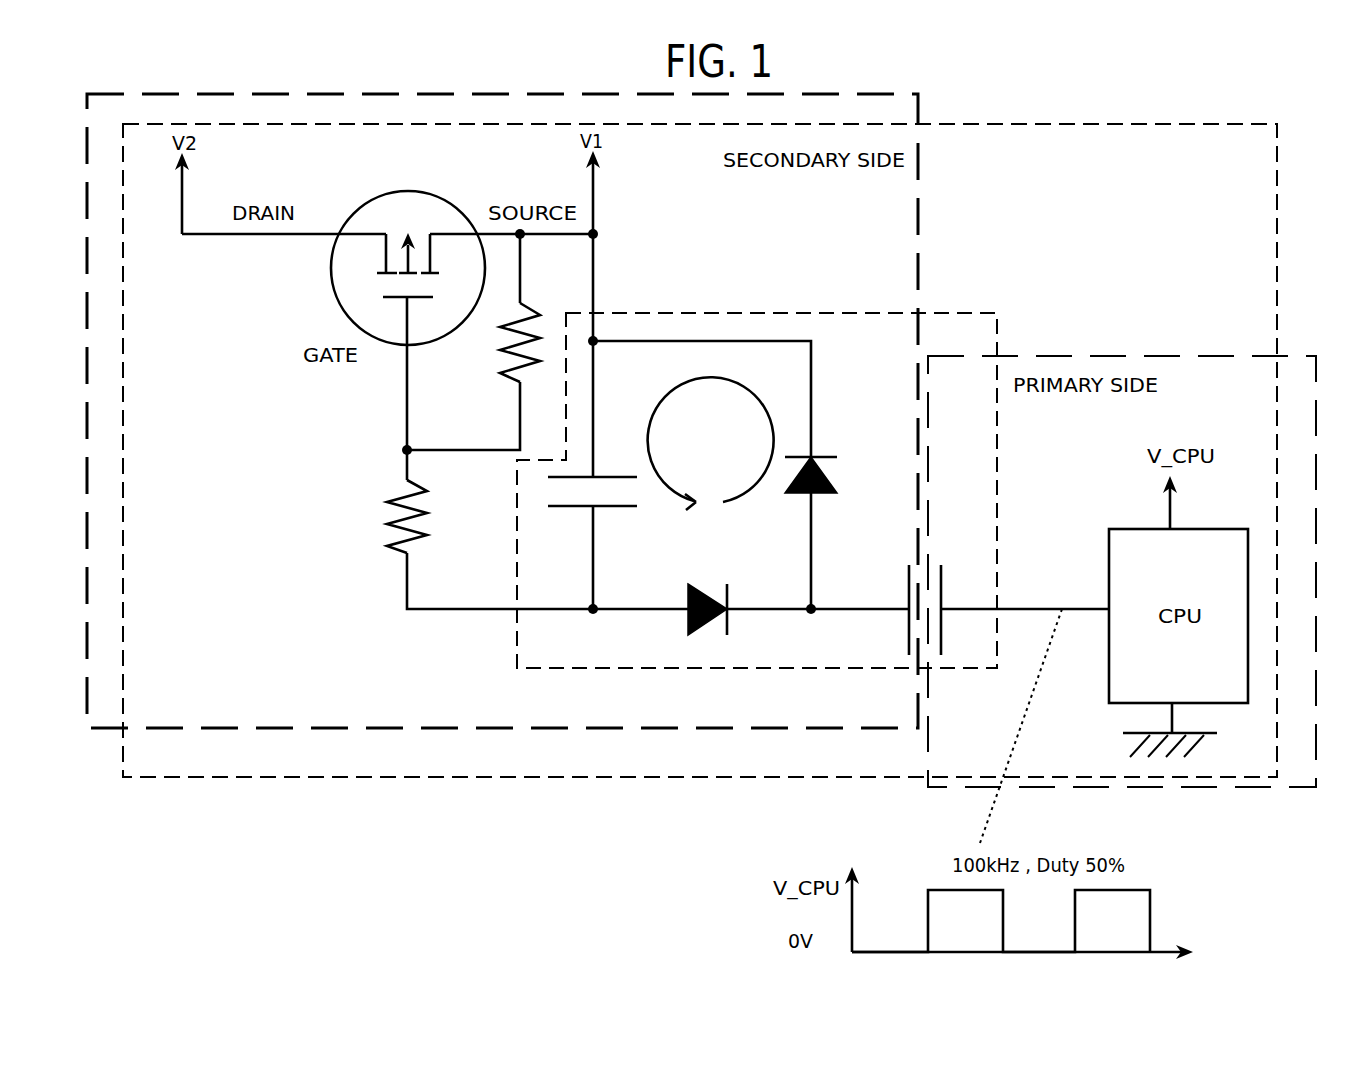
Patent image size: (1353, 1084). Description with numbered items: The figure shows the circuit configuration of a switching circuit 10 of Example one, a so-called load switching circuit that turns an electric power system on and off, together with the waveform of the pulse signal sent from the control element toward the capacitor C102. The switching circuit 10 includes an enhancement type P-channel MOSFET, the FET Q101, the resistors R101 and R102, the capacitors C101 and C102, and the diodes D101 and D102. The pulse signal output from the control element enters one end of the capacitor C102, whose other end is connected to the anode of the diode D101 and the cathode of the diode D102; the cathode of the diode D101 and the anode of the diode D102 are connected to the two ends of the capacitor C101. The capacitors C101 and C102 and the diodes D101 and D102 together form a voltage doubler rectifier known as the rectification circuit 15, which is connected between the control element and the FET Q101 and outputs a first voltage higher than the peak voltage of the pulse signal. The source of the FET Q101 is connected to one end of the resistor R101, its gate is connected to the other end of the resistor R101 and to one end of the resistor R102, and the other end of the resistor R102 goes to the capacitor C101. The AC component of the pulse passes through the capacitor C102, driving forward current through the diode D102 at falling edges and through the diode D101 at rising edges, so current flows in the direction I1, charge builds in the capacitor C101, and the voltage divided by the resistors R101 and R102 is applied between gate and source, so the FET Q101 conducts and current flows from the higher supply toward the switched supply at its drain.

The switching circuit 10 is at (365, 777).
The rectification circuit 15 is at (673, 313).
The FET Q101 is at (408, 247).
The resistor R101 is at (539, 330).
The resistor R102 is at (377, 516).
The capacitor C101 is at (586, 512).
The capacitor C102 is at (949, 597).
The diode D101 is at (830, 458).
The diode D102 is at (700, 589).
The current direction I1 is at (710, 377).